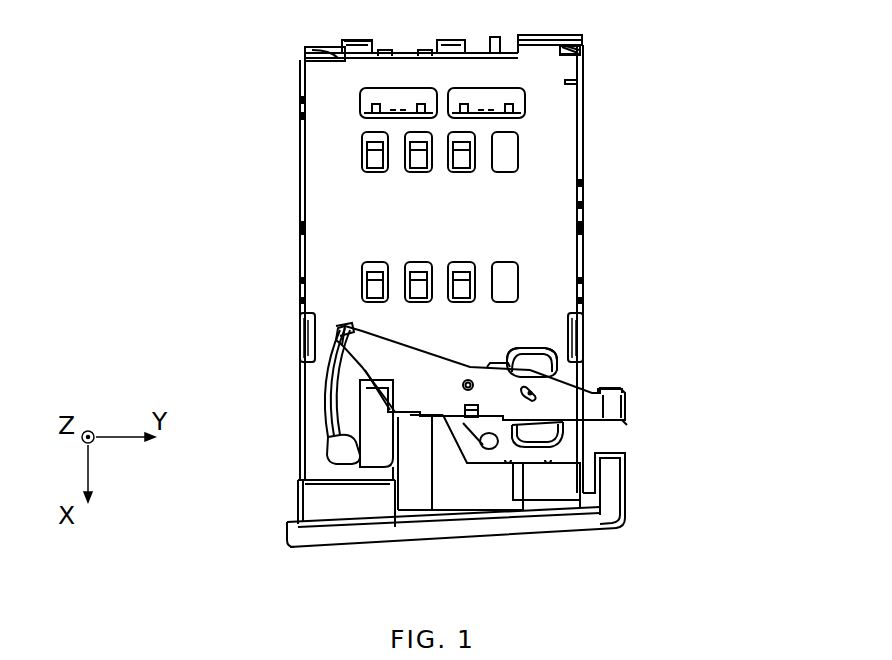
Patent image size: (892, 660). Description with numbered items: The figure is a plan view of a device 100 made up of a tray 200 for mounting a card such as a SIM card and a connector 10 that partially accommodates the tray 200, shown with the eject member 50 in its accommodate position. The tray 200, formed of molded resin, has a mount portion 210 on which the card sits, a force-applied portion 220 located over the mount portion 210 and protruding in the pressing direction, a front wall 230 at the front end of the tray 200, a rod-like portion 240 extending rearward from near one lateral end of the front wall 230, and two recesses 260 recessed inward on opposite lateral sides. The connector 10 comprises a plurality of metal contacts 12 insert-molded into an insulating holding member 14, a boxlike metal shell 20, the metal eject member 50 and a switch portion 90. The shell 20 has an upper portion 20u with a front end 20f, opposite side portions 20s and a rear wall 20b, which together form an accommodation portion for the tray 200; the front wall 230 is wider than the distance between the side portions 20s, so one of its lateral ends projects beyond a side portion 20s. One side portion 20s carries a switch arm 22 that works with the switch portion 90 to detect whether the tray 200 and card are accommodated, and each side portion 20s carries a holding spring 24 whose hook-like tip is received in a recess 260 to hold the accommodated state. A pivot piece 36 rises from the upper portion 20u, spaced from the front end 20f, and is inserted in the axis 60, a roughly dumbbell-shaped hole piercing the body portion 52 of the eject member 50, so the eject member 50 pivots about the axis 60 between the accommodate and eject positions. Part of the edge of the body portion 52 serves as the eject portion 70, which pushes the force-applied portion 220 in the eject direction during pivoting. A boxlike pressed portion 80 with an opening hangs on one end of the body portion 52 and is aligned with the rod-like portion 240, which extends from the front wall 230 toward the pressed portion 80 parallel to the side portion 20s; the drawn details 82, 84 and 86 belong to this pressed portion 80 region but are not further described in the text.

The connector 10 is at (292, 112).
The contacts 12 is at (372, 152).
The holding member 14 is at (510, 150).
The shell 20 is at (318, 76).
The rear wall 20b is at (407, 50).
The side portions 20s is at (585, 188).
The upper portion 20u is at (300, 262).
The front end 20f is at (352, 472).
The switch arm 22 is at (586, 132).
The holding spring 24 is at (305, 336).
The pivot piece 36 is at (537, 393).
The eject member 50 is at (445, 370).
The body portion 52 is at (532, 354).
The axis 60 is at (540, 400).
The eject portion 70 is at (392, 420).
The pressed portion 80 is at (698, 402).
The operation portion 82 is at (606, 391).
The extension portion 84 is at (627, 411).
The extension portion 86 is at (612, 406).
The switch portion 90 is at (582, 48).
The device 100 is at (767, 64).
The tray 200 is at (275, 528).
The mount portion 210 is at (447, 440).
The force-applied portion 220 is at (420, 418).
The front wall 230 is at (627, 520).
The rod-like portion 240 is at (627, 474).
The recesses 260 is at (300, 320).